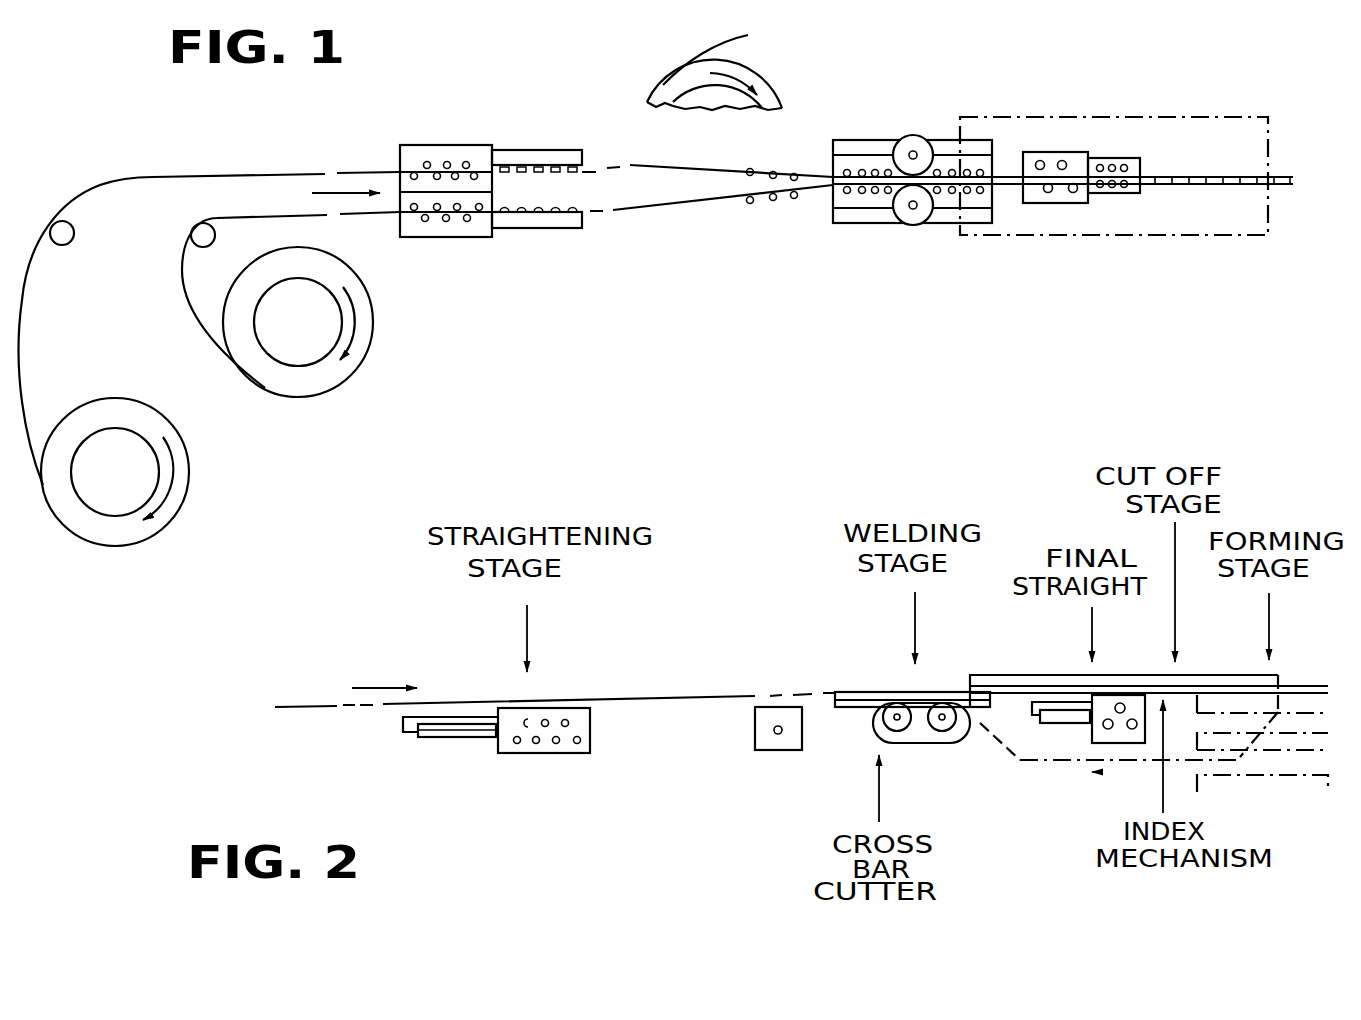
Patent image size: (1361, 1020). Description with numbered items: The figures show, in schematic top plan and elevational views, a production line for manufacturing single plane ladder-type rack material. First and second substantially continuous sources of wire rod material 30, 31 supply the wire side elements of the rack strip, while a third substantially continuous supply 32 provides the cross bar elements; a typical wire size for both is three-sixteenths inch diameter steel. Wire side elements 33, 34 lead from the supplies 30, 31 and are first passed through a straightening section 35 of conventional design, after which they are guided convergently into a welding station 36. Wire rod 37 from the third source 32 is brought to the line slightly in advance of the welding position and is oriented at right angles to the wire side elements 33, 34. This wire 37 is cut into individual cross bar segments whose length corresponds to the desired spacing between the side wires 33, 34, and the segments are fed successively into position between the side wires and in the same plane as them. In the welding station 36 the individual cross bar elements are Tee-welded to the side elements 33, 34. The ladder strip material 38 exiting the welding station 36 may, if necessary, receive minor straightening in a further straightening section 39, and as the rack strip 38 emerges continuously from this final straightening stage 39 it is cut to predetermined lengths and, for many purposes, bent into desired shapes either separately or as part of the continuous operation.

In FIG. 1, the first source of wire rod material 30 is at (163, 435).
In FIG. 1, the second source of wire rod material 31 is at (317, 378).
In FIG. 1, the third continuous supply 32 is at (663, 82).
In FIG. 1, the wire side element 33 is at (328, 172).
In FIG. 1, the wire side element 34 is at (247, 218).
In FIG. 1, the straightening section 35 is at (527, 142).
In FIG. 2, the straightening section 35 is at (520, 757).
In FIG. 1, the welding station 36 is at (918, 232).
In FIG. 2, the welding station 36 is at (923, 752).
In FIG. 1, the wire rod 37 is at (873, 140).
In FIG. 1, the ladder strip material 38 is at (1013, 186).
In FIG. 1, the straightening section 39 is at (1073, 150).